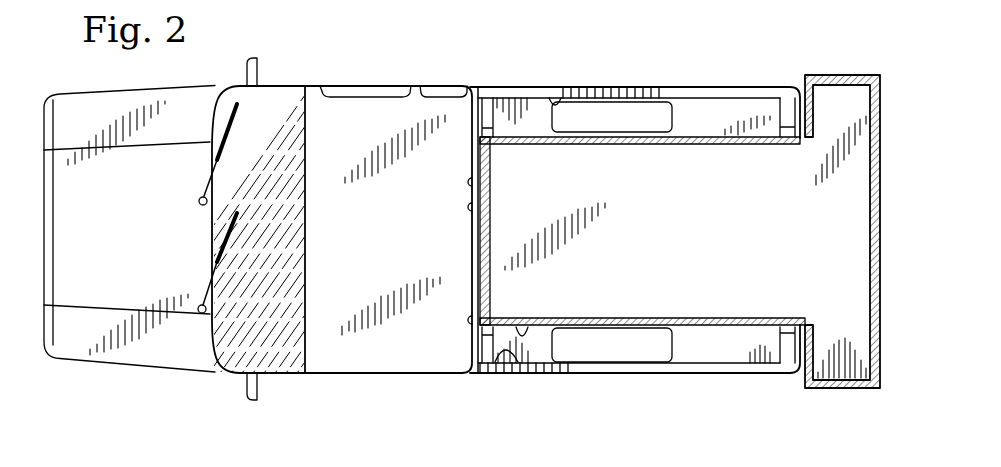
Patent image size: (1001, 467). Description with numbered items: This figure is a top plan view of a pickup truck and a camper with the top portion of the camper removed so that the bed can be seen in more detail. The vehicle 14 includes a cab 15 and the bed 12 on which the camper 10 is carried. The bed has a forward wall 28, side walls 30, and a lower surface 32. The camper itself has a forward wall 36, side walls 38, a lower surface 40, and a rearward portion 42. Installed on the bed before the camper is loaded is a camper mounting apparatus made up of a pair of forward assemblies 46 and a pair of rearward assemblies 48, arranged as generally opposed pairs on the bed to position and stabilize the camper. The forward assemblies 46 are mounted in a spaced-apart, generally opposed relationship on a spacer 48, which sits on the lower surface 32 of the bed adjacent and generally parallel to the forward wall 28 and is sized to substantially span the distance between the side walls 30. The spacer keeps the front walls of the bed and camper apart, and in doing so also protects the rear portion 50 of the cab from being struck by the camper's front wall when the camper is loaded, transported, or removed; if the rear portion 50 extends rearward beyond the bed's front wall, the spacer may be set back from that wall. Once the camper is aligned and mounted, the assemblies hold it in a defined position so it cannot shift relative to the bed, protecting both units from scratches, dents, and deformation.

The camper 10 is at (462, 243).
The bed 12 is at (652, 80).
The vehicle 14 is at (318, 60).
The cab 15 is at (396, 76).
The forward wall 28 is at (472, 326).
The side walls 30 is at (560, 97).
The lower surface 32 is at (685, 131).
The forward wall 36 is at (486, 208).
The side walls 38 is at (600, 132).
The lower surface 40 is at (637, 265).
The rearward portion 42 is at (858, 68).
The forward assemblies 46 is at (488, 116).
The rearward assemblies 48 is at (770, 106).
The rear portion 50 is at (472, 184).